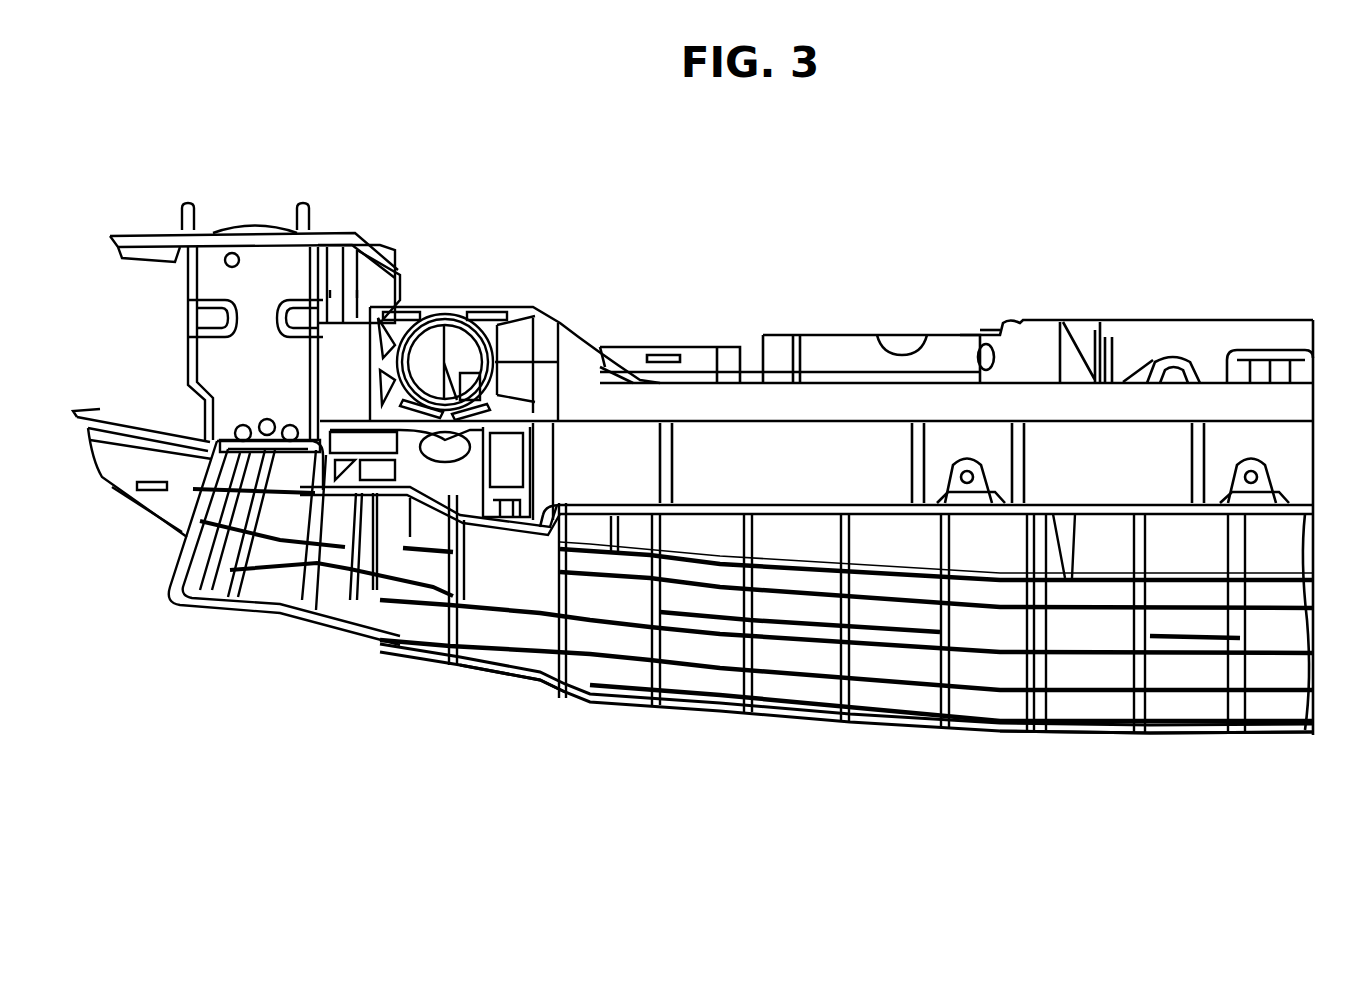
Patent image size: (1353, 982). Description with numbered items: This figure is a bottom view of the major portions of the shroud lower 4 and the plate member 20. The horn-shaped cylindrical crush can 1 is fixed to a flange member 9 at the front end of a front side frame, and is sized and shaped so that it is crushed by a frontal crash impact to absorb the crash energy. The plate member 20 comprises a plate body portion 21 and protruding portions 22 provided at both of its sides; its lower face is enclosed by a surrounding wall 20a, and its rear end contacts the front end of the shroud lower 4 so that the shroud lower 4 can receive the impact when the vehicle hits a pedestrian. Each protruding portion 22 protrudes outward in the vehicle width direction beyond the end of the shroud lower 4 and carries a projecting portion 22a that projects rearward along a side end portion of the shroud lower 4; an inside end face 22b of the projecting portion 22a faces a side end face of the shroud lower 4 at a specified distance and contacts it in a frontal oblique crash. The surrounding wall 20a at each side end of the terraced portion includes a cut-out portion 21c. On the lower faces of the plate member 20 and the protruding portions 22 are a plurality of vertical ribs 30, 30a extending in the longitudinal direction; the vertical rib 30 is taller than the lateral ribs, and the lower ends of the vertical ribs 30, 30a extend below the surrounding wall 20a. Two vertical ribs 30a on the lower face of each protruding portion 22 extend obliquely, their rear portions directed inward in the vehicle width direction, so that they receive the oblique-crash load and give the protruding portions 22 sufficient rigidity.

The crush can 1 is at (205, 360).
The shroud lower 4 is at (525, 300).
The flange member 9 is at (200, 232).
The plate member 20 is at (700, 653).
The surrounding wall 20a is at (1013, 735).
The plate body portion 21 is at (897, 732).
The cut-out portion 21c is at (515, 678).
The protruding portion 22 is at (203, 585).
The projecting portion 22a is at (212, 420).
The inside end face 22b is at (308, 432).
The vertical rib 30 is at (560, 683).
The vertical rib 30a is at (297, 610).